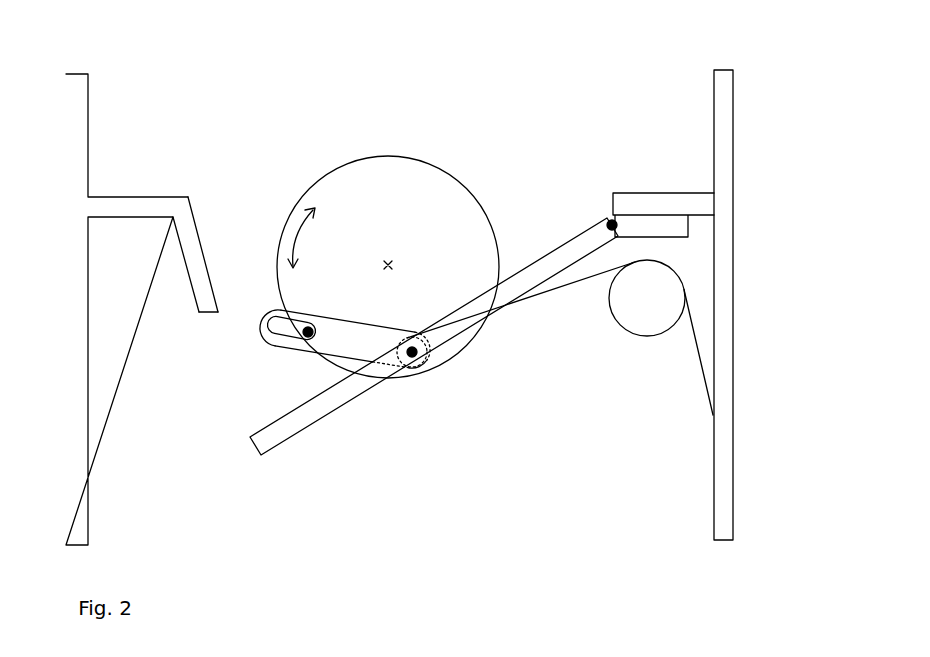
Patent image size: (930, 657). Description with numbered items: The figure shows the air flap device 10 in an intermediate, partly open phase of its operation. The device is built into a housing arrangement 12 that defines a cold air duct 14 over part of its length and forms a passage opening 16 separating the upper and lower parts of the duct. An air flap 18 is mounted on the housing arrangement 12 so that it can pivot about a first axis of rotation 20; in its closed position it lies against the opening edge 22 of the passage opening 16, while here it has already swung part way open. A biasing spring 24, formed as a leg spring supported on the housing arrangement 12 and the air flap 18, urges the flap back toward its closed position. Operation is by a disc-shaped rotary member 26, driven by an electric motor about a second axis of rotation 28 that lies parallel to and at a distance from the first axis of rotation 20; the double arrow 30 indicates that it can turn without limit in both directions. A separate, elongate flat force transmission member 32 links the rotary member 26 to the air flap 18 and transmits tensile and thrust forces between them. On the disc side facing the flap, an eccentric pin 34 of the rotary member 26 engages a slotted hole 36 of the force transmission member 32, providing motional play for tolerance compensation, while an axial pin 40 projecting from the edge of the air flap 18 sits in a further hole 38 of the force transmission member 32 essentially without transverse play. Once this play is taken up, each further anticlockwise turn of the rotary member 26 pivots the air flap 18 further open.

The air flap device 10 is at (688, 72).
The housing arrangement 12 is at (735, 105).
The cold air duct 14 is at (233, 79).
The passage opening 16 is at (217, 314).
The air flap 18 is at (289, 440).
The first axis of rotation 20 is at (612, 220).
The opening edge 22 is at (208, 315).
The biasing spring 24 is at (648, 337).
The rotary member 26 is at (440, 340).
The second axis of rotation 28 is at (388, 264).
The double arrow 30 is at (297, 238).
The force transmission member 32 is at (290, 346).
The eccentric pin 34 is at (307, 330).
The slotted hole 36 is at (265, 323).
The hole 38 is at (402, 364).
The axial pin 40 is at (433, 353).